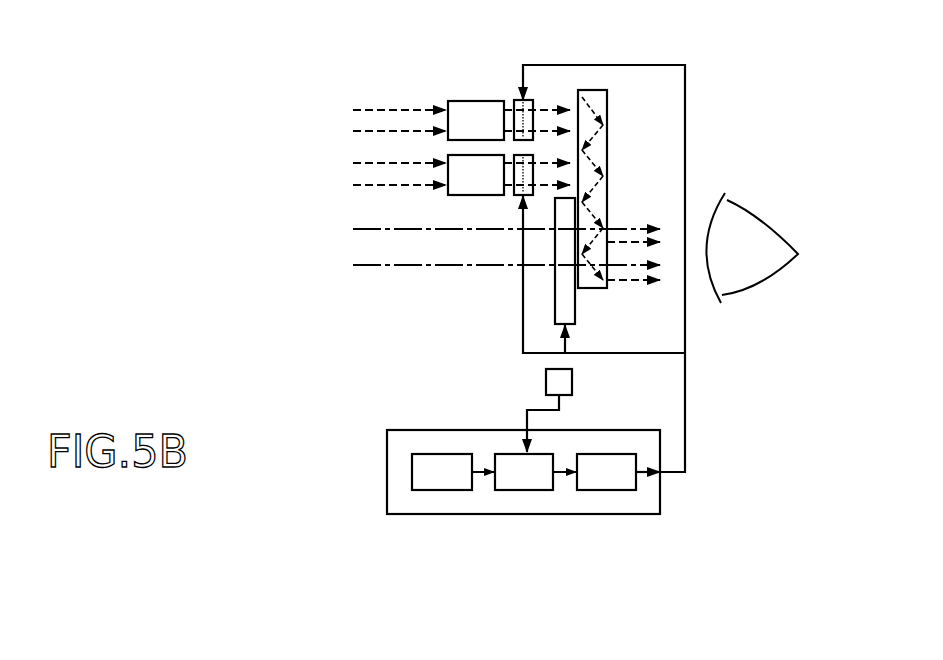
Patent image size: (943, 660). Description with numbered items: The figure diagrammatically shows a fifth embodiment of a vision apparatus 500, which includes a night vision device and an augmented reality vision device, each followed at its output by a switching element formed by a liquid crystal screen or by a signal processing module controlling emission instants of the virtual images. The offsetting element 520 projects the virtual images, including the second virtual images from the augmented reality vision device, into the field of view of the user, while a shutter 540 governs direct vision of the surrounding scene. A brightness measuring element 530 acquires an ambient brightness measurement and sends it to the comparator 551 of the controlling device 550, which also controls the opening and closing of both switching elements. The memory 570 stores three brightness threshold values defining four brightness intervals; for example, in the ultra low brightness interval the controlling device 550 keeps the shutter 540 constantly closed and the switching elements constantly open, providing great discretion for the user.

The vision apparatus 500 is at (720, 55).
The offsetting element 520 is at (593, 98).
The shutter 540 is at (570, 305).
The brightness measuring element 530 is at (546, 385).
The controlling device 550 is at (612, 502).
The comparator 551 is at (523, 482).
The memory 570 is at (433, 482).